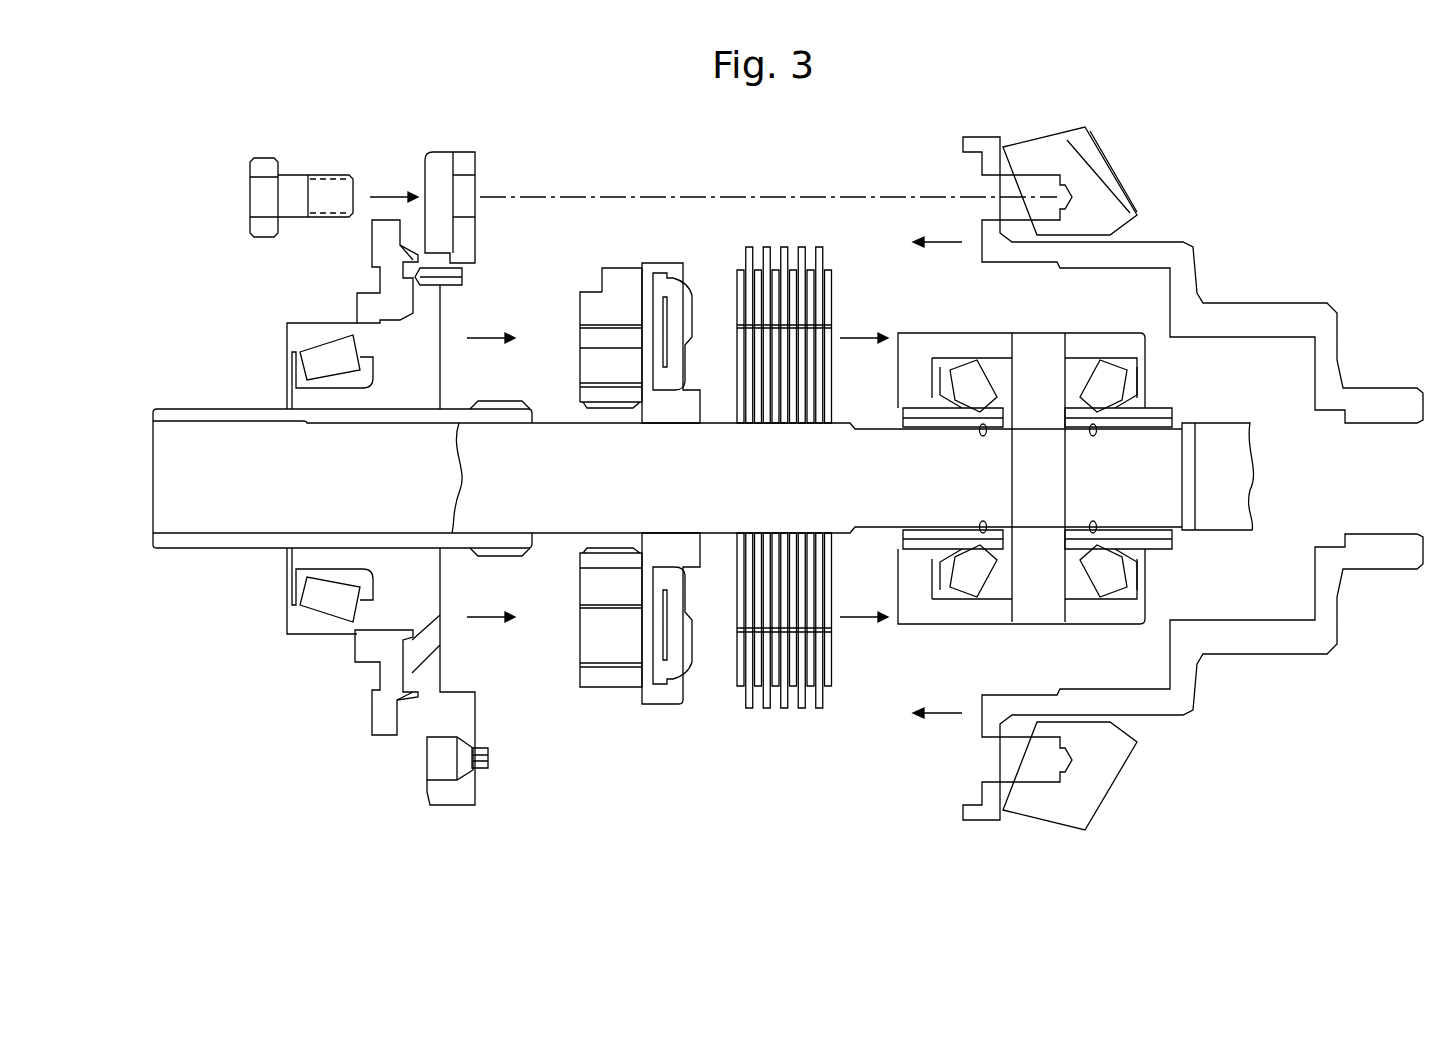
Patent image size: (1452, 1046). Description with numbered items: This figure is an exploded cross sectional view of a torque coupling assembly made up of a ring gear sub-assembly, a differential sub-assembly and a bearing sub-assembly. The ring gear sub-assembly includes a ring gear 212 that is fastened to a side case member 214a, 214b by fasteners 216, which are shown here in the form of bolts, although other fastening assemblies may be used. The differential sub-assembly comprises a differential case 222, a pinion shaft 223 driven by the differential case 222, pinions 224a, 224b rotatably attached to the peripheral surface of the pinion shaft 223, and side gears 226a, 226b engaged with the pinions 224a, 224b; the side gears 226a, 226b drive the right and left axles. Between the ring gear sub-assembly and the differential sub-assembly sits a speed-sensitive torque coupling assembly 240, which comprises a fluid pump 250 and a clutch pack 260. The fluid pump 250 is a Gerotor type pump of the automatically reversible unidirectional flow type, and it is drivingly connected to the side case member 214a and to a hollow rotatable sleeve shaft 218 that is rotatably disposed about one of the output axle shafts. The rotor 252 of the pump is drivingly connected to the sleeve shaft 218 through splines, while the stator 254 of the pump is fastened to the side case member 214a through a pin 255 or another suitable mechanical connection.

The ring gear 212 is at (1043, 148).
The side case member 214a is at (465, 160).
The side case member 214b is at (1312, 311).
The fasteners 216 is at (262, 197).
The sleeve shaft 218 is at (457, 410).
The differential case 222 is at (960, 345).
The pinion shaft 223 is at (1041, 350).
The pinion 224a is at (1077, 378).
The pinion 224b is at (1077, 578).
The side gear 226a is at (950, 412).
The side gear 226b is at (1125, 412).
The speed-sensitive torque coupling assembly 240 is at (599, 461).
The fluid pump 250 is at (593, 310).
The rotor 252 is at (592, 562).
The stator 254 is at (605, 280).
The pin 255 is at (450, 286).
The clutch pack 260 is at (833, 717).